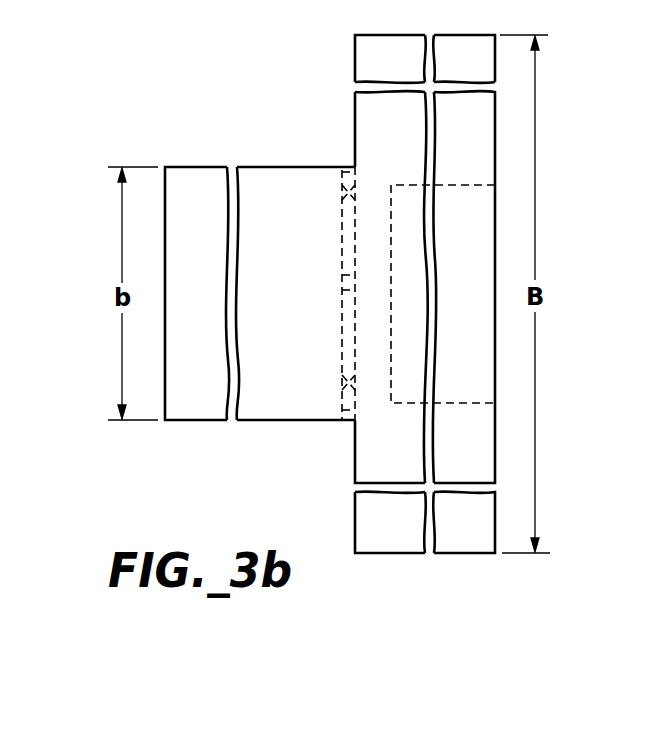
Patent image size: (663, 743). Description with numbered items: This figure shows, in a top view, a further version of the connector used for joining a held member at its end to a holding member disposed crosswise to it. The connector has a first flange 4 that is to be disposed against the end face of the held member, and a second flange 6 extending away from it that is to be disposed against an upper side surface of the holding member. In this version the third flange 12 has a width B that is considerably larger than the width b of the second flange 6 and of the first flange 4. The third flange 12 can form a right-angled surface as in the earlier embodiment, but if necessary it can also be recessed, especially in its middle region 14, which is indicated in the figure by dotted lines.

The first flange 4 is at (350, 420).
The second flange 6 is at (205, 413).
The third flange 12 is at (360, 66).
The middle region 14 is at (402, 192).